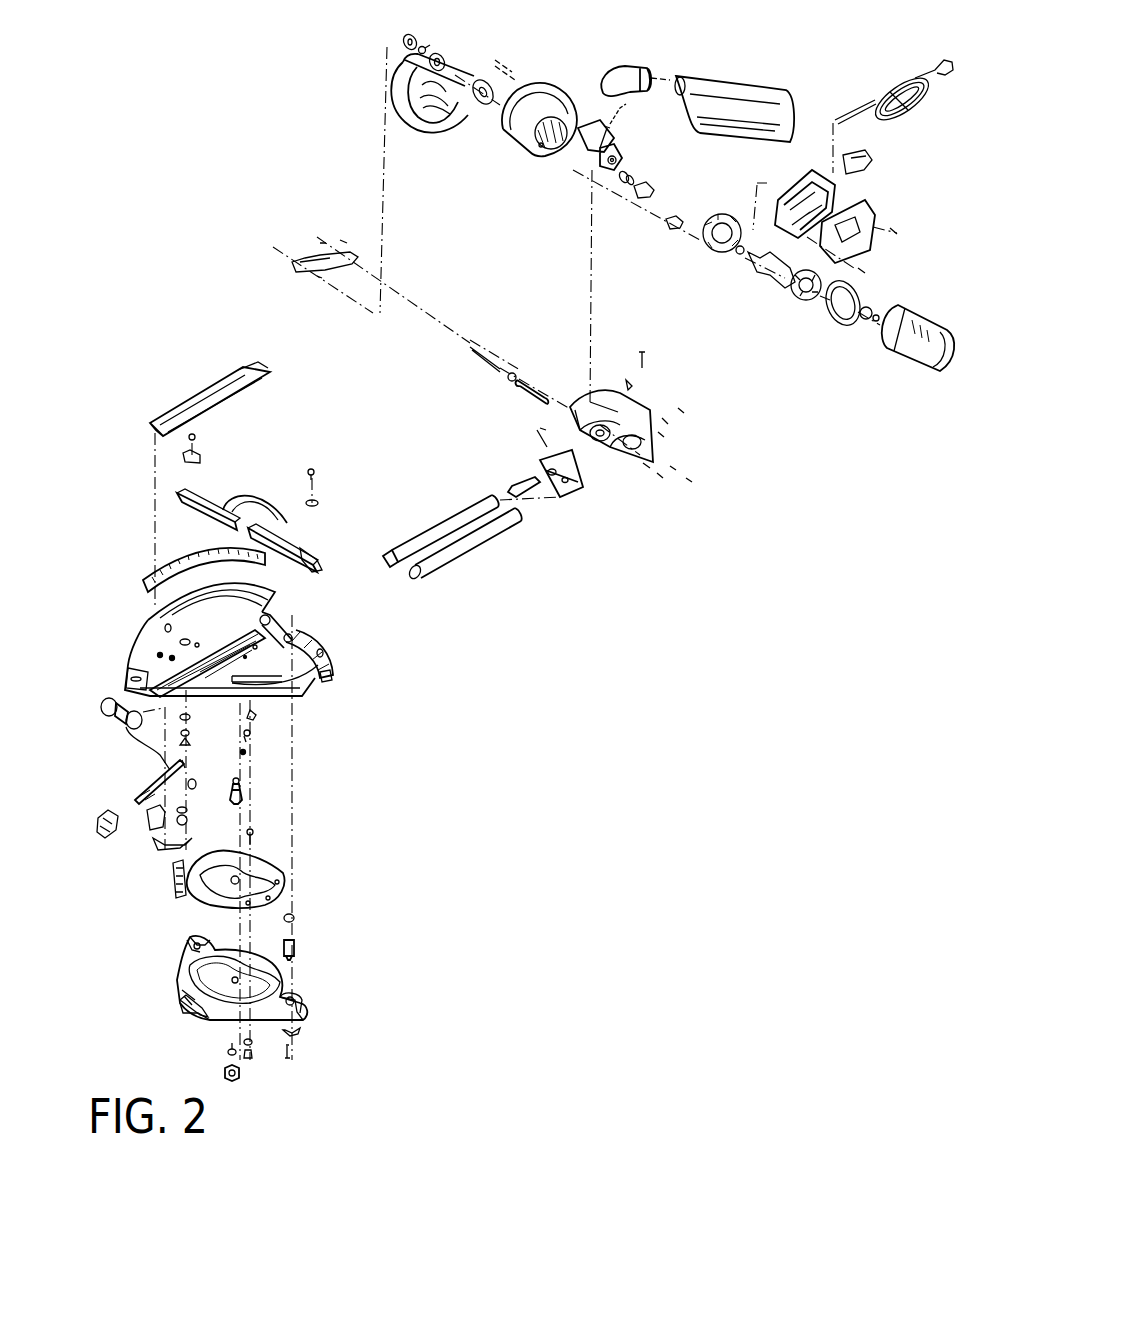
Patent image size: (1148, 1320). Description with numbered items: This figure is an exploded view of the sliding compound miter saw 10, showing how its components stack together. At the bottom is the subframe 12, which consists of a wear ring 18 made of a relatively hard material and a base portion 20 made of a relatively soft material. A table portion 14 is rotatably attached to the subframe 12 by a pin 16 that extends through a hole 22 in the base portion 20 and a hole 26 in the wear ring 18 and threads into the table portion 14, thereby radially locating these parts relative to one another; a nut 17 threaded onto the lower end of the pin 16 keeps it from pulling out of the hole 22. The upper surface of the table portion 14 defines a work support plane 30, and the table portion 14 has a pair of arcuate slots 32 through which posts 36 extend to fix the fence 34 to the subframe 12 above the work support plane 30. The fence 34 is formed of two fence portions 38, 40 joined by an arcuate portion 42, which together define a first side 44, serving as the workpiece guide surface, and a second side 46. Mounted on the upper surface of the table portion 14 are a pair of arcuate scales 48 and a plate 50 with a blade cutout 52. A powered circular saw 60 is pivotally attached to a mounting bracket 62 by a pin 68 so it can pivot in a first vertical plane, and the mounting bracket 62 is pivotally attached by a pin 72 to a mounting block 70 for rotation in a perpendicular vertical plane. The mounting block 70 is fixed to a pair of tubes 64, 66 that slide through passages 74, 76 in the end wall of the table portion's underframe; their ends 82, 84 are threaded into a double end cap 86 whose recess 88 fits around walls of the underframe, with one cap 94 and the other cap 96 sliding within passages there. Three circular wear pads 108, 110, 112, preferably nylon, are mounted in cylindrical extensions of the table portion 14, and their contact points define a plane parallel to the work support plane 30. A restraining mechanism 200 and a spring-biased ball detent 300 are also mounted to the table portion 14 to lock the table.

The sliding compound miter saw 10 is at (622, 632).
The subframe 12 is at (270, 968).
The table portion 14 is at (320, 647).
The pin 16 is at (240, 795).
The nut 17 is at (236, 1077).
The wear ring 18 is at (243, 868).
The base portion 20 is at (303, 1012).
The hole 22 is at (187, 1010).
The hole 26 is at (230, 880).
The work support plane 30 is at (185, 635).
The arcuate slots 32 is at (168, 612).
The fence 34 is at (265, 505).
The posts 36 is at (293, 947).
The fence portion 38 is at (200, 482).
The fence portion 40 is at (310, 550).
The arcuate portion 42 is at (270, 512).
The first side 44 is at (215, 490).
The second side 46 is at (230, 500).
The arcuate scales 48 is at (205, 560).
The plate 50 is at (225, 378).
The blade cutout 52 is at (245, 372).
The powered circular saw 60 is at (545, 78).
The mounting bracket 62 is at (643, 418).
The tube 64 is at (437, 530).
The tube 66 is at (467, 543).
The pin 68 is at (533, 377).
The mounting block 70 is at (560, 493).
The pin 72 is at (520, 482).
The passage 74 is at (250, 680).
The passage 76 is at (327, 670).
The end 82 is at (385, 553).
The end 84 is at (415, 577).
The double end cap 86 is at (125, 742).
The recess 88 is at (130, 728).
The cap 94 is at (113, 712).
The cap 96 is at (172, 760).
The wear pad 108 is at (250, 733).
The wear pad 110 is at (257, 717).
The wear pad 112 is at (193, 787).
The restraining mechanism 200 is at (187, 763).
The spring-biased ball detent 300 is at (243, 752).